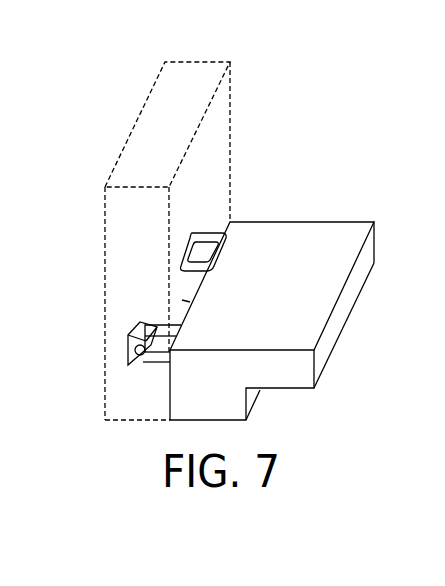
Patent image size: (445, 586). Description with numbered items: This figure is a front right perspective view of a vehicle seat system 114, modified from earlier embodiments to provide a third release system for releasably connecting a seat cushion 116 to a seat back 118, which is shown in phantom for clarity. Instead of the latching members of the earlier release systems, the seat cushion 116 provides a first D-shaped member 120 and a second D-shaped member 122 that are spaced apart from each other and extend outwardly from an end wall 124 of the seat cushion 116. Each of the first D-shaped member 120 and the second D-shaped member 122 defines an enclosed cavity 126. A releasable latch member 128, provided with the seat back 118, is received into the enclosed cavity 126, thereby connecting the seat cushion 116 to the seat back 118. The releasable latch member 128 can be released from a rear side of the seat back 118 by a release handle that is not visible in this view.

The vehicle seat system 114 is at (296, 170).
The seat cushion 116 is at (322, 227).
The seat back 118 is at (231, 117).
The first D-shaped member 120 is at (148, 357).
The second D-shaped member 122 is at (213, 233).
The end wall 124 is at (176, 299).
The enclosed cavity 126 is at (160, 338).
The releasable latch member 128 is at (128, 348).